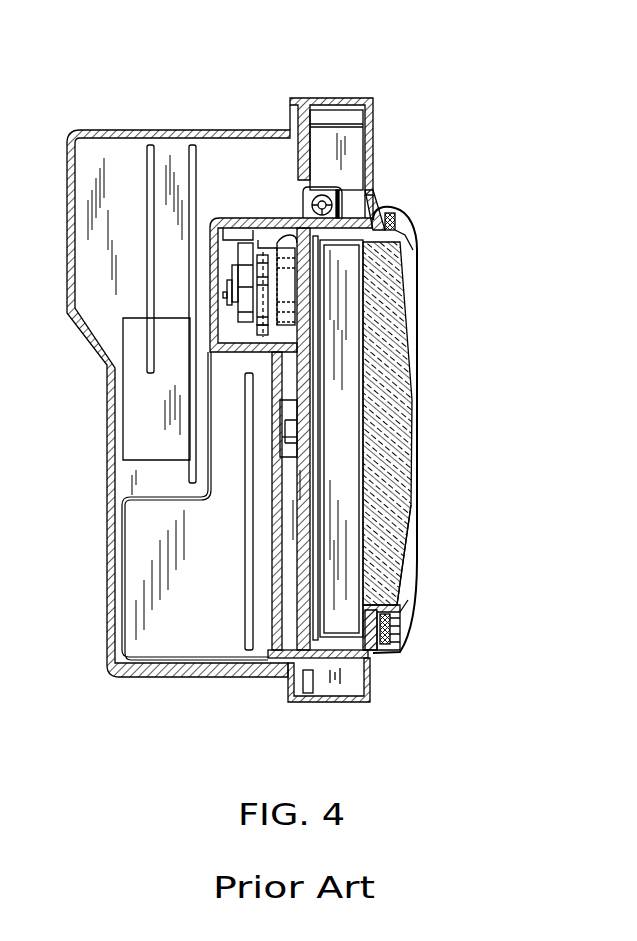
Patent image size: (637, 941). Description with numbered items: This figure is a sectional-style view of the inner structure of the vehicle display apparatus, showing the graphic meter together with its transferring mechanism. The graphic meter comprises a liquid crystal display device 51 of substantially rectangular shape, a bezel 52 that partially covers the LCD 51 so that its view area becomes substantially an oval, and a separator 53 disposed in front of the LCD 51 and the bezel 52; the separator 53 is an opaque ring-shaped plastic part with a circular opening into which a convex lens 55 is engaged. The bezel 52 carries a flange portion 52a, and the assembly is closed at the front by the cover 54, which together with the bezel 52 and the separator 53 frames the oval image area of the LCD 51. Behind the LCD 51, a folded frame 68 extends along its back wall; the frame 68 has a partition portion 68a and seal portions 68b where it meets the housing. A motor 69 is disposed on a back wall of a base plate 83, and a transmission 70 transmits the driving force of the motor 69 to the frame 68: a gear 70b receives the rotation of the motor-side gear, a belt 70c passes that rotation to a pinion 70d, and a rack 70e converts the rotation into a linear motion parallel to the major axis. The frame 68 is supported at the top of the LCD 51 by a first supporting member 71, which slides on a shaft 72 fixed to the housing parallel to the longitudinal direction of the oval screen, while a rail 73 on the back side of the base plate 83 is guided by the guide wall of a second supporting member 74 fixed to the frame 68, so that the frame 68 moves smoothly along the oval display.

The liquid crystal display (LCD) display device 51 is at (342, 533).
The bezel 52 is at (382, 658).
The bezel flange 52a is at (392, 601).
The separator 53 is at (394, 622).
The cover glass 54 is at (417, 260).
The lens 55 is at (417, 313).
The folded frame 68 is at (262, 584).
The partition wall 68a is at (282, 612).
The seal member 68b is at (380, 190).
The motor 69 is at (288, 272).
The transmission 70 is at (243, 245).
The gear 70b is at (273, 331).
The belt 70c is at (235, 243).
The pinion 70d is at (250, 247).
The rack 70e is at (272, 235).
The first supporting member 71 is at (342, 190).
The shaft 72 is at (325, 200).
The rail 73 is at (300, 430).
The second supporting member 74 is at (297, 456).
The base plate 83 is at (316, 660).